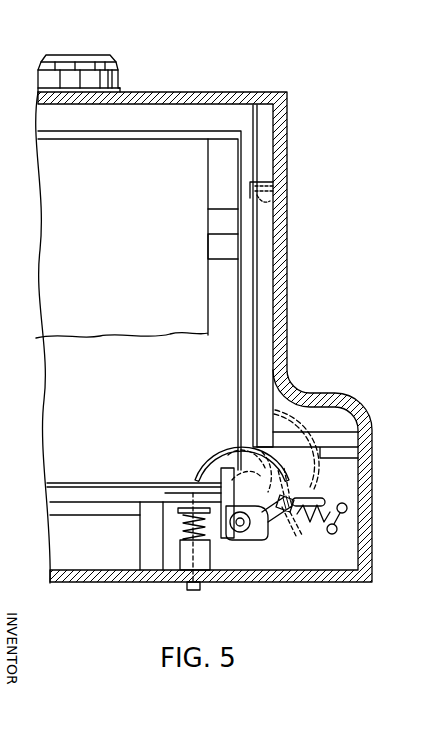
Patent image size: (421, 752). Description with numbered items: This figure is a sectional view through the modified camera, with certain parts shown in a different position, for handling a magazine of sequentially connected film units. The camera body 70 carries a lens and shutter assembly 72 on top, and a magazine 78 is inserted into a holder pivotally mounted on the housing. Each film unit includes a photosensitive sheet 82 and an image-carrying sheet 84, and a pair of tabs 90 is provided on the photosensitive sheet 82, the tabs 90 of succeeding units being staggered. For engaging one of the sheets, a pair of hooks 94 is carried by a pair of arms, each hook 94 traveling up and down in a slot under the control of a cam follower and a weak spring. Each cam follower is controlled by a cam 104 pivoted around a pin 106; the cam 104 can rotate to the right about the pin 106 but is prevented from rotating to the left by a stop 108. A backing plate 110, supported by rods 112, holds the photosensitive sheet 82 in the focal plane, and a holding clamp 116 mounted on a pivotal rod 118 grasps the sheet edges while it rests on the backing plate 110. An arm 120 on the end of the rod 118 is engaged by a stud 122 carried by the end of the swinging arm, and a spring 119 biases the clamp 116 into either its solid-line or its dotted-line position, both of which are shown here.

The camera body 70 is at (280, 308).
The lens and shutter assembly 72 is at (119, 86).
The magazine 78 is at (229, 142).
The photosensitive sheet 82 is at (110, 483).
The image-carrying sheet 84 is at (113, 253).
The tabs 90 is at (209, 206).
The hooks 94 is at (183, 485).
The cam 104 is at (265, 250).
The pin 106 is at (268, 204).
The stop 108 is at (318, 428).
The backing plate 110 is at (62, 494).
The rods 112 is at (140, 550).
The holding clamp 116 is at (305, 400).
The pivotal rod 118 is at (303, 489).
The spring 119 is at (347, 511).
The arm 120 is at (266, 545).
The stud 122 is at (234, 545).